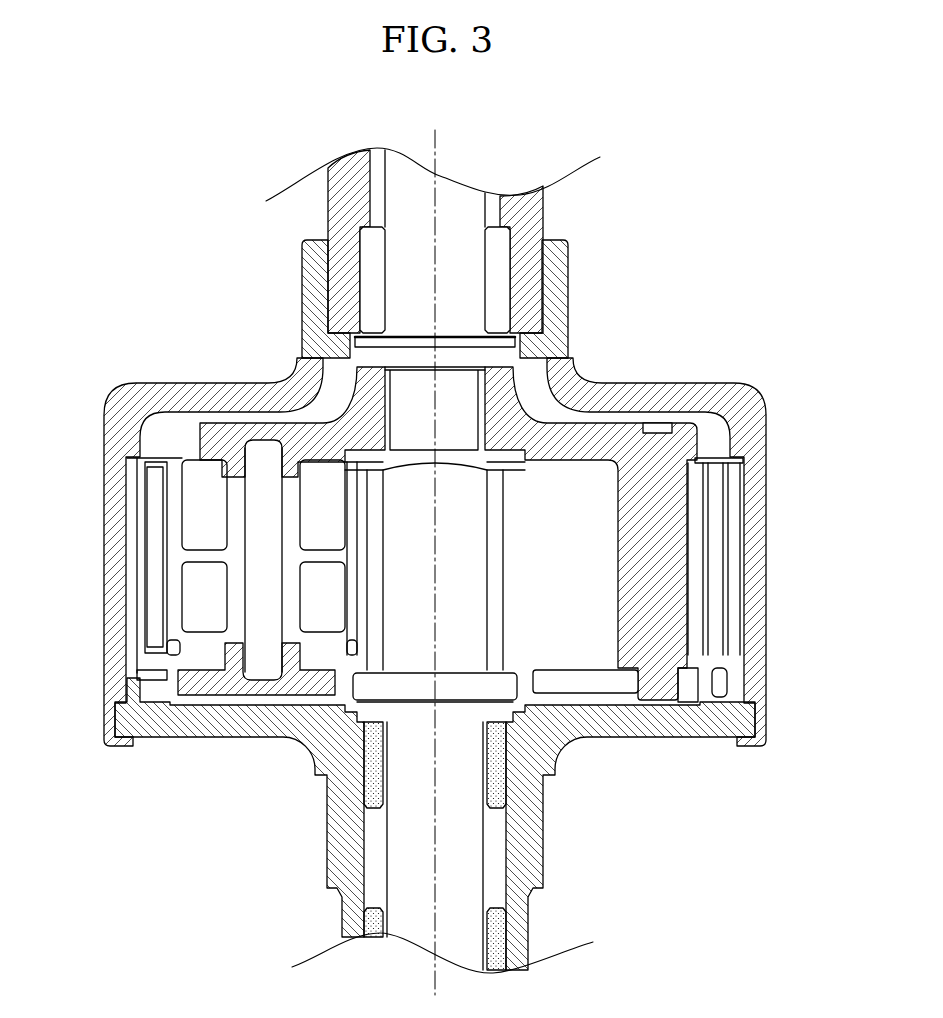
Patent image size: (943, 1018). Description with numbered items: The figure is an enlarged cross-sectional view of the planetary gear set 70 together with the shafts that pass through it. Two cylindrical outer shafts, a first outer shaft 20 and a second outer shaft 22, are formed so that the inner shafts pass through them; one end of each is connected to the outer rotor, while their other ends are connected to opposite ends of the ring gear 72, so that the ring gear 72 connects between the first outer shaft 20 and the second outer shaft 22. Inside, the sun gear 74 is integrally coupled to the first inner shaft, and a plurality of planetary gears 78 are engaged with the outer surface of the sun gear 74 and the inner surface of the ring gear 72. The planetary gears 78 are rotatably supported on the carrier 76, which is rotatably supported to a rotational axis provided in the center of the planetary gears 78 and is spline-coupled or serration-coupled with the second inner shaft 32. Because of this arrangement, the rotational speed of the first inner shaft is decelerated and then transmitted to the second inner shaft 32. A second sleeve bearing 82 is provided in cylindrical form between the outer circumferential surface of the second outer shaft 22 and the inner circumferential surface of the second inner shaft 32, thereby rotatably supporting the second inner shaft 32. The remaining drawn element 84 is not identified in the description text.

The first outer shaft 20 is at (342, 848).
The second outer shaft 22 is at (523, 213).
The second inner shaft 32 is at (407, 273).
The planetary gear set 70 is at (669, 372).
The ring gear 72 is at (745, 403).
The sun gear 74 is at (463, 523).
The carrier 76 is at (603, 440).
The planetary gears 78 is at (207, 550).
The second sleeve bearing 82 is at (372, 760).
The upper bushing 84 is at (500, 273).